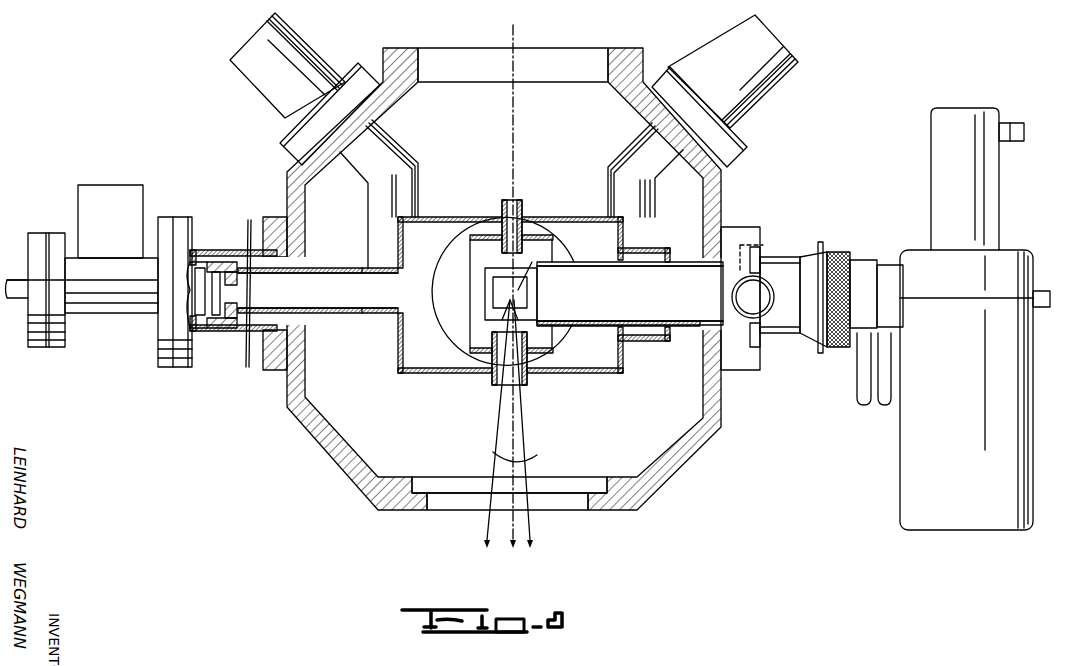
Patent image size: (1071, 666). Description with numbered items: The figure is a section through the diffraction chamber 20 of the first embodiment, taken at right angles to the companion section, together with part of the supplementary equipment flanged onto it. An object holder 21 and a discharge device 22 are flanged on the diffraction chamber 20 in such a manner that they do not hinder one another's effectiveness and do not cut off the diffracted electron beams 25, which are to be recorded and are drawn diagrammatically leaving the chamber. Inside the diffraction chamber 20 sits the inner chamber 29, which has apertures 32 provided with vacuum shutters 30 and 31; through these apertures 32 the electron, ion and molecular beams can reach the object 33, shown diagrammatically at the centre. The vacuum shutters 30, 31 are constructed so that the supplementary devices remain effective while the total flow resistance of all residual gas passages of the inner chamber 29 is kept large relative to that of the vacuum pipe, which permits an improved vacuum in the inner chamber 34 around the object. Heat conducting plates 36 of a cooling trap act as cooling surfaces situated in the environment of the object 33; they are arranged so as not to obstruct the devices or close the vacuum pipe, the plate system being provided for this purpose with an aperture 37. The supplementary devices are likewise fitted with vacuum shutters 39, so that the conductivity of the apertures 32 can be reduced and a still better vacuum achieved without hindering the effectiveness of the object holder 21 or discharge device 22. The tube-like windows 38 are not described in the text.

The diffraction chamber 20 is at (704, 157).
The object holder 21 is at (781, 282).
The discharge device 22 is at (124, 284).
The diffracted electron beams 25 is at (523, 454).
The inner chamber 29 is at (585, 219).
The vacuum shutter 30 is at (521, 208).
The vacuum shutter 31 is at (362, 280).
The apertures 32 is at (503, 201).
The object 33 is at (493, 288).
The inner chamber 34 is at (438, 317).
The heat conducting plates 36 is at (484, 220).
The aperture 37 is at (487, 300).
The window pipe 38 is at (294, 78).
The vacuum shutters 39 is at (328, 270).